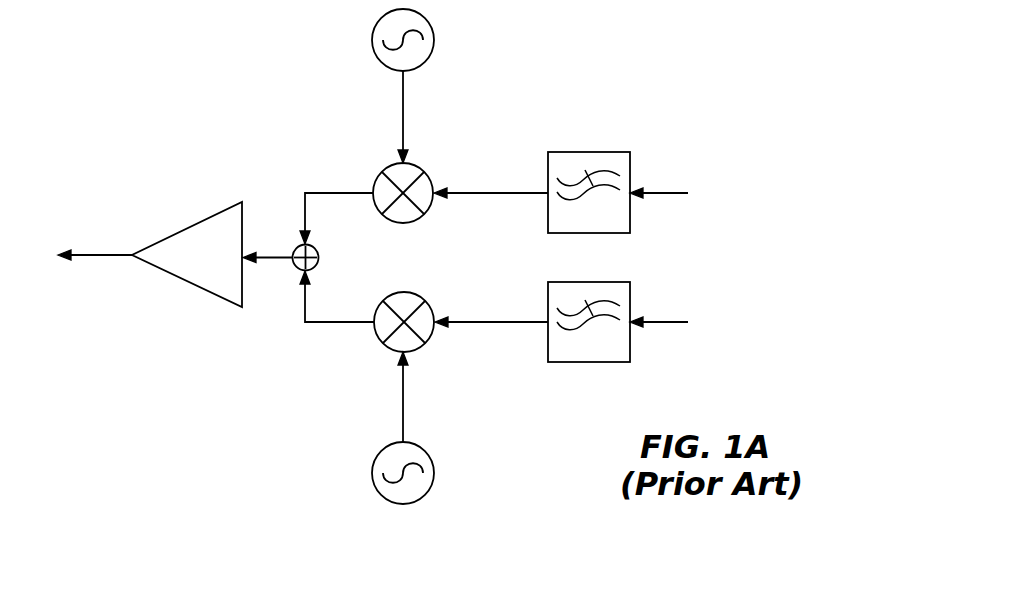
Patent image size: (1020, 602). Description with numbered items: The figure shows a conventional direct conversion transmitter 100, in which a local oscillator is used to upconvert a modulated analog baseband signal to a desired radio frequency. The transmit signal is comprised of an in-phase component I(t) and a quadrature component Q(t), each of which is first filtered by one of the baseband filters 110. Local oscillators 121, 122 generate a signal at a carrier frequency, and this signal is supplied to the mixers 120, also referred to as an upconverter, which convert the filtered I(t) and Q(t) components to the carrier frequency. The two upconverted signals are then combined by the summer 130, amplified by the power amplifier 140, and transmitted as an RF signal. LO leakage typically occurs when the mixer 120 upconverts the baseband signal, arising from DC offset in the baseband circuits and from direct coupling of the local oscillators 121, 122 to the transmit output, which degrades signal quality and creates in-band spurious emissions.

The direct conversion transmitter 100 is at (378, 267).
The baseband filter 110 is at (590, 152).
The mixer 120 is at (423, 216).
The local oscillator 121 is at (385, 68).
The local oscillator 122 is at (382, 450).
The summer 130 is at (312, 270).
The power amplifier 140 is at (167, 239).